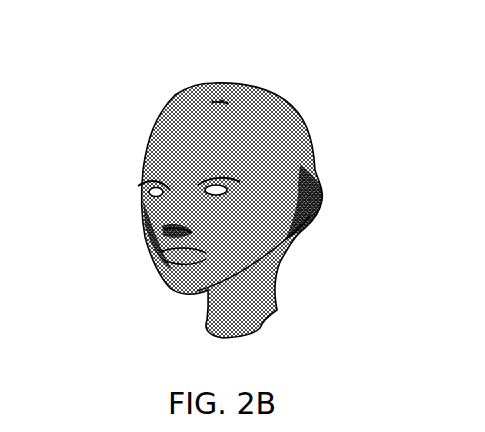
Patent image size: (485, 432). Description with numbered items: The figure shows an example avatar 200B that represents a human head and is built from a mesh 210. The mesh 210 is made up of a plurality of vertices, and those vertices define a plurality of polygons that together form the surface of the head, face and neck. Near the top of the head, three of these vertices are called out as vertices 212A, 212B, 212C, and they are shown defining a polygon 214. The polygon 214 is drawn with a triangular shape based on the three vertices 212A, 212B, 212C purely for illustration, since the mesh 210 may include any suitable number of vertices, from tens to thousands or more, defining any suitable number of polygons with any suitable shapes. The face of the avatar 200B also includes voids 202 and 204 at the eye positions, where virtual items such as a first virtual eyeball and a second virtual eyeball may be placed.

The avatar 200B is at (96, 78).
The void 202 is at (148, 194).
The void 204 is at (218, 189).
The mesh 210 is at (262, 328).
The vertex 212A is at (213, 100).
The vertex 212B is at (223, 100).
The vertex 212C is at (226, 103).
The polygon 214 is at (226, 101).